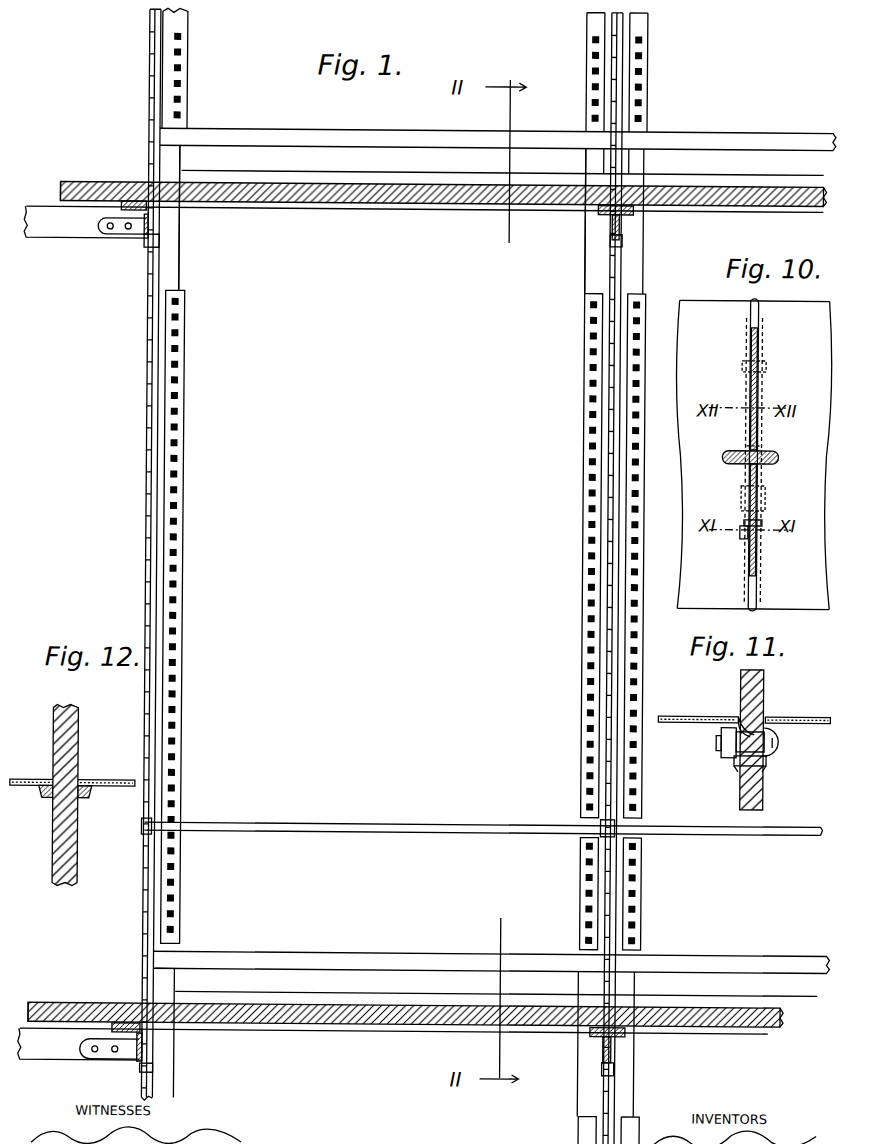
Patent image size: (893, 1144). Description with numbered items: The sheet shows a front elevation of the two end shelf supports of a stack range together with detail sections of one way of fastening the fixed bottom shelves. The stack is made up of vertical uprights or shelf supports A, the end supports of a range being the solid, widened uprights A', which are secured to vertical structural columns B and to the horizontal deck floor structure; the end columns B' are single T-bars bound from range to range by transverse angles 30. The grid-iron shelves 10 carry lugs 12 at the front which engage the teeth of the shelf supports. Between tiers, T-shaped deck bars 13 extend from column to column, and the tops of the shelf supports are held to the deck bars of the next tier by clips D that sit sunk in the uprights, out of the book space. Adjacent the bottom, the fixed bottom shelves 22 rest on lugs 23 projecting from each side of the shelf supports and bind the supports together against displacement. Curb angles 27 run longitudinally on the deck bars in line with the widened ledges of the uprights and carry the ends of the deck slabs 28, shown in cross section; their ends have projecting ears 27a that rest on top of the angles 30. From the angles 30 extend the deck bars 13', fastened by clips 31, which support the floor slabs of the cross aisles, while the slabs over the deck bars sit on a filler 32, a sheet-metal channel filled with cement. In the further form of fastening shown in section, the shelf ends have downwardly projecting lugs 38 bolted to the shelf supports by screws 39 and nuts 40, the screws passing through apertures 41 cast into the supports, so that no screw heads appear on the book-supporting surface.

In FIG. 1, the shelves 10 is at (376, 829).
In FIG. 11, the shelves 10 is at (744, 719).
In FIG. 1, the lugs 12 is at (148, 825).
In FIG. 1, the deck bars 13 is at (643, 646).
In FIG. 1, the deck bars 13' is at (82, 650).
In FIG. 1, the fixed bottom shelves 22 is at (338, 127).
In FIG. 10, the fixed bottom shelves 22 is at (754, 454).
In FIG. 10, the lugs 23 is at (750, 416).
In FIG. 12, the lugs 23 is at (50, 798).
In FIG. 1, the curb angles 27 is at (334, 181).
In FIG. 1, the projecting ears or lugs 27a is at (132, 1022).
In FIG. 1, the deck slabs 28 is at (86, 181).
In FIG. 1, the angles 30 is at (152, 220).
In FIG. 1, the clips 31 is at (118, 233).
In FIG. 1, the filler 32 is at (636, 207).
In FIG. 11, the downwardly projecting lugs 38 is at (740, 762).
In FIG. 10, the screws 39 is at (766, 520).
In FIG. 11, the screws 39 is at (783, 738).
In FIG. 10, the nuts 40 is at (744, 527).
In FIG. 11, the nuts 40 is at (735, 742).
In FIG. 11, the apertures 41 is at (770, 722).
In FIG. 1, the shelf supports A is at (610, 578).
In FIG. 10, the shelf supports A is at (773, 455).
In FIG. 11, the shelf supports A is at (752, 740).
In FIG. 12, the shelf supports A is at (80, 794).
In FIG. 1, the end shelf supports A' is at (141, 554).
In FIG. 1, the vertical structural columns B is at (560, 220).
In FIG. 10, the vertical structural columns B is at (761, 455).
In FIG. 1, the end columns B' is at (202, 217).
In FIG. 1, the clips D is at (624, 238).